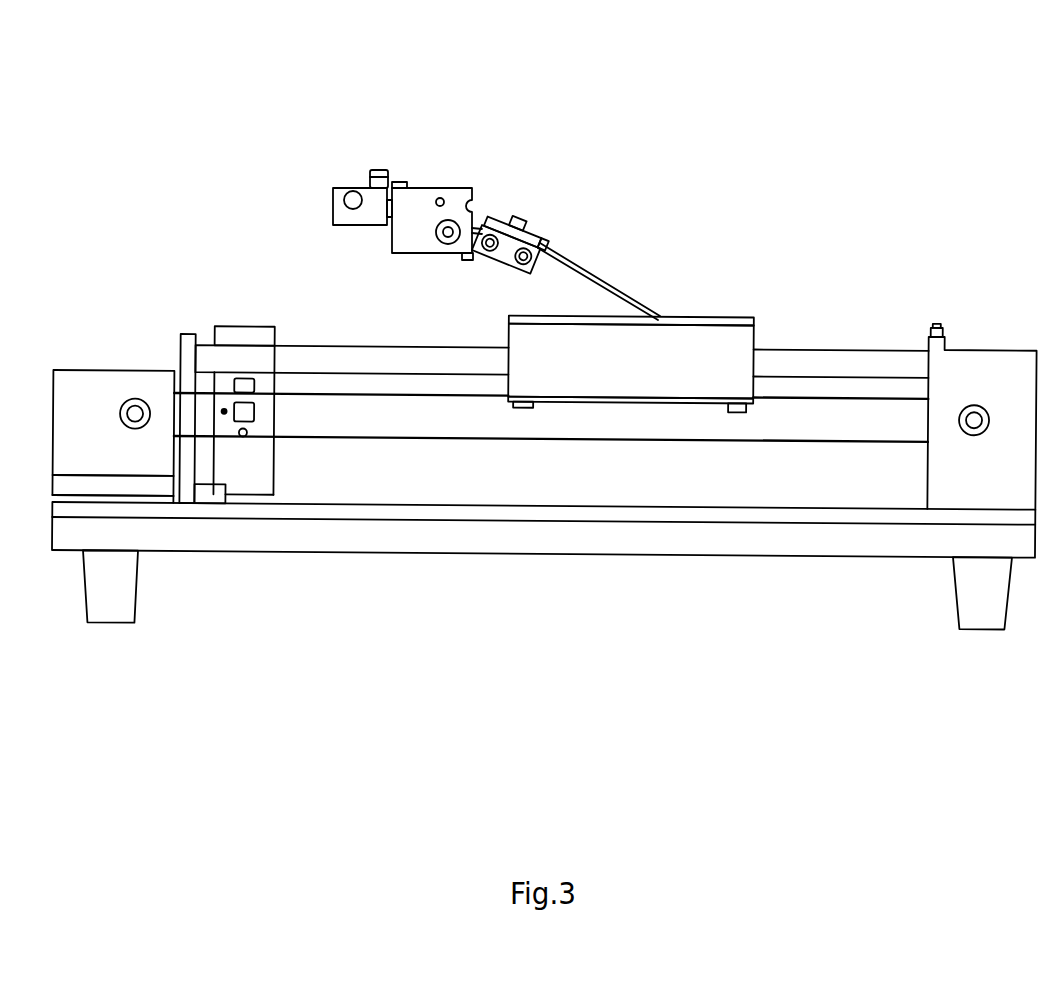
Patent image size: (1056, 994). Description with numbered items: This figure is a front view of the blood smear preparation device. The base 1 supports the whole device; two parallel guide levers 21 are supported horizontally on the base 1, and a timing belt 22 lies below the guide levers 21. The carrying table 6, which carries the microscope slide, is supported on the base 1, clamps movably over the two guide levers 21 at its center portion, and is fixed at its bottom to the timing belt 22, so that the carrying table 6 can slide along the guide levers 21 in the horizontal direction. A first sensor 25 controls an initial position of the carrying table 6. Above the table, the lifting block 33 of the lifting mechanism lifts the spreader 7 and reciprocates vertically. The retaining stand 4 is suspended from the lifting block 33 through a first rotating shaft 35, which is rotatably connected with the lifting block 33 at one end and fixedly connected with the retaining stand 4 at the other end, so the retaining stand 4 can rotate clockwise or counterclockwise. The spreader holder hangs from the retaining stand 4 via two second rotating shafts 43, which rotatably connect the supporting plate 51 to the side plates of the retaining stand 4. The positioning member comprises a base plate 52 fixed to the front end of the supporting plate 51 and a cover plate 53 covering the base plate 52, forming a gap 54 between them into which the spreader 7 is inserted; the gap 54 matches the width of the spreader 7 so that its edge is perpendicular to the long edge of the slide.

The base 1 is at (658, 537).
The guide levers 21 is at (383, 365).
The timing belt 22 is at (857, 398).
The first sensor 25 is at (232, 417).
The carrying table 6 is at (673, 350).
The spreader 7 is at (607, 290).
The lifting block 33 is at (335, 202).
The first rotating shaft 35 is at (387, 202).
The retaining stand 4 is at (413, 208).
The second rotating shafts 43 is at (452, 232).
The supporting plate 51 is at (483, 223).
The base plate 52 is at (525, 233).
The cover plate 53 is at (535, 240).
The gap 54 is at (543, 243).